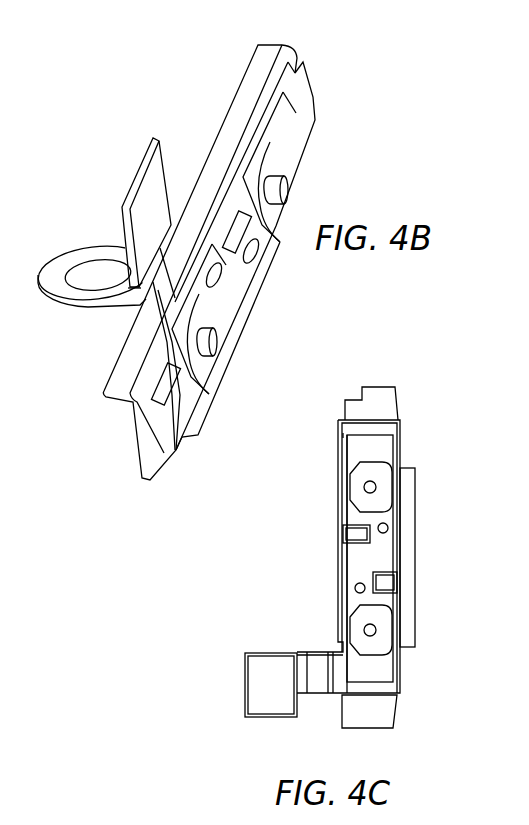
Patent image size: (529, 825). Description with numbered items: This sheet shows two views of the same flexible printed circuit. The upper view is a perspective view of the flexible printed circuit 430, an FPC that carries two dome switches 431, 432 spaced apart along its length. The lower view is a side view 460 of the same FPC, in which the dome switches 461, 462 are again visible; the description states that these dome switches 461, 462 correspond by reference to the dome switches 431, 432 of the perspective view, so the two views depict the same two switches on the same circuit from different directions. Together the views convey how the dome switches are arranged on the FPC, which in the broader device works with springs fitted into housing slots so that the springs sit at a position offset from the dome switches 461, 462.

In FIG. 4B, the flexible printed circuit 430 is at (325, 92).
In FIG. 4B, the dome switch 431 is at (285, 186).
In FIG. 4B, the dome switch 432 is at (215, 343).
In FIG. 4C, the side view 460 is at (418, 418).
In FIG. 4C, the dome switch 461 is at (376, 487).
In FIG. 4C, the dome switch 462 is at (377, 630).